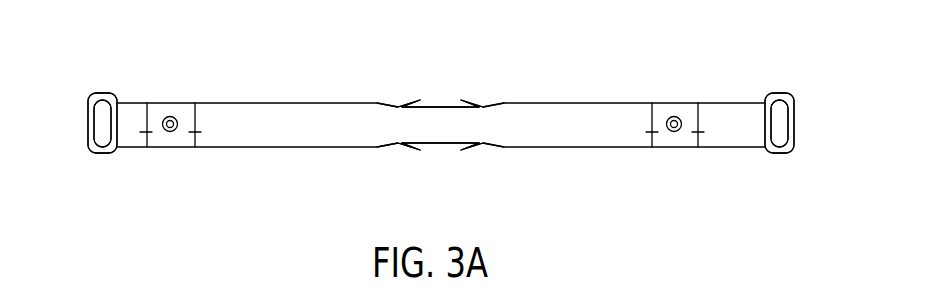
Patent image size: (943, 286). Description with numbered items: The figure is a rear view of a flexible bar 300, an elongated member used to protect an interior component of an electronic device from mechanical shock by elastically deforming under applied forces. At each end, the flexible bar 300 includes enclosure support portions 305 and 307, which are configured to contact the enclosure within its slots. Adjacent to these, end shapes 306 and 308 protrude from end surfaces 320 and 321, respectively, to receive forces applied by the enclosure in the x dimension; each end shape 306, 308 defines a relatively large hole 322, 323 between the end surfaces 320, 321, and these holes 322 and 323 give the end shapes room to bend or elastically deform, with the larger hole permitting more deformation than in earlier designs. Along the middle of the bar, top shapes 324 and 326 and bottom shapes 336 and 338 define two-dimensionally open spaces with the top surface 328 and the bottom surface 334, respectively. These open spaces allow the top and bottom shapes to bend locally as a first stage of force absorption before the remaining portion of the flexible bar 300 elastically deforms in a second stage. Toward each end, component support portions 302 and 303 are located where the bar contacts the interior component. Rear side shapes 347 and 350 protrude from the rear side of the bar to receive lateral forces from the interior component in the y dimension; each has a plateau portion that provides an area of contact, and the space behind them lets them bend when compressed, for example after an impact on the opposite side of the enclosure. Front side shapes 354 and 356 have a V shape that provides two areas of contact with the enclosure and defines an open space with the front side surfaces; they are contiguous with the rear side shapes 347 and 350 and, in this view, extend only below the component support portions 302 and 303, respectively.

The flexible bar 300 is at (297, 70).
The component support portion 302 is at (167, 117).
The component support portion 303 is at (672, 117).
The enclosure support portion 305 is at (101, 93).
The end shape 306 is at (88, 128).
The enclosure support portion 307 is at (777, 93).
The end shape 308 is at (794, 105).
The end surface 320 is at (108, 118).
The end surface 321 is at (773, 119).
The hole 322 is at (103, 148).
The hole 323 is at (779, 148).
The top shape 324 is at (492, 101).
The top shape 326 is at (398, 101).
The top surface 328 is at (433, 105).
The bottom surface 334 is at (440, 147).
The bottom shape 336 is at (471, 152).
The bottom shape 338 is at (406, 152).
The rear side shape 347 is at (183, 112).
The rear side shape 350 is at (690, 112).
The front side shape 354 is at (158, 140).
The front side shape 356 is at (660, 137).